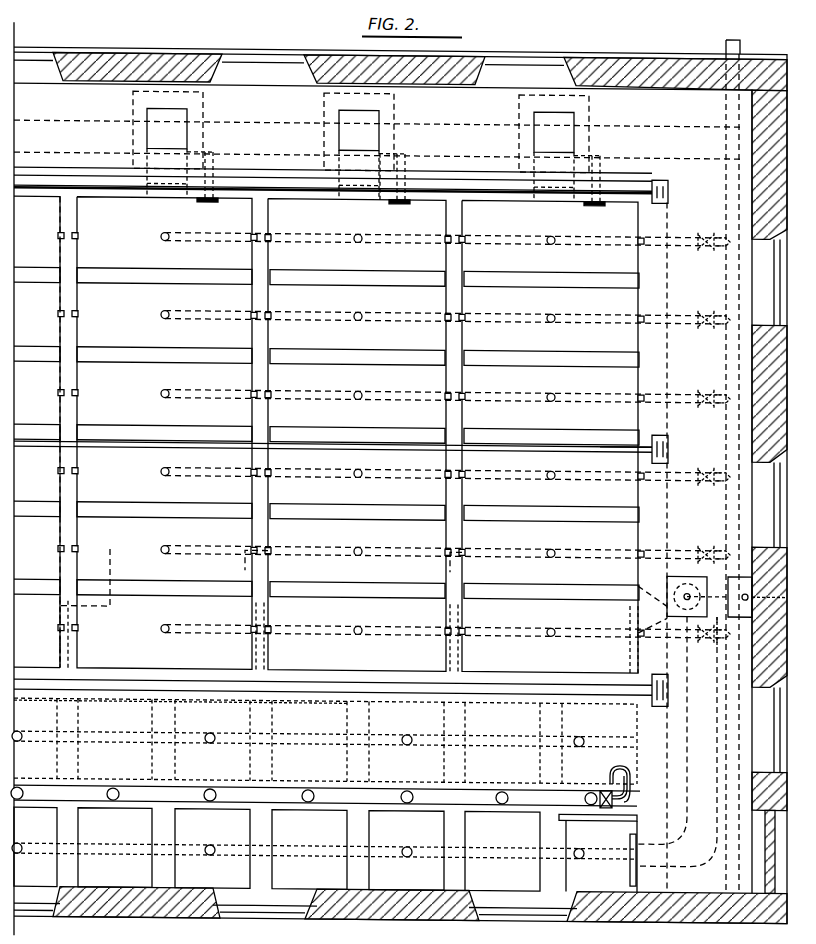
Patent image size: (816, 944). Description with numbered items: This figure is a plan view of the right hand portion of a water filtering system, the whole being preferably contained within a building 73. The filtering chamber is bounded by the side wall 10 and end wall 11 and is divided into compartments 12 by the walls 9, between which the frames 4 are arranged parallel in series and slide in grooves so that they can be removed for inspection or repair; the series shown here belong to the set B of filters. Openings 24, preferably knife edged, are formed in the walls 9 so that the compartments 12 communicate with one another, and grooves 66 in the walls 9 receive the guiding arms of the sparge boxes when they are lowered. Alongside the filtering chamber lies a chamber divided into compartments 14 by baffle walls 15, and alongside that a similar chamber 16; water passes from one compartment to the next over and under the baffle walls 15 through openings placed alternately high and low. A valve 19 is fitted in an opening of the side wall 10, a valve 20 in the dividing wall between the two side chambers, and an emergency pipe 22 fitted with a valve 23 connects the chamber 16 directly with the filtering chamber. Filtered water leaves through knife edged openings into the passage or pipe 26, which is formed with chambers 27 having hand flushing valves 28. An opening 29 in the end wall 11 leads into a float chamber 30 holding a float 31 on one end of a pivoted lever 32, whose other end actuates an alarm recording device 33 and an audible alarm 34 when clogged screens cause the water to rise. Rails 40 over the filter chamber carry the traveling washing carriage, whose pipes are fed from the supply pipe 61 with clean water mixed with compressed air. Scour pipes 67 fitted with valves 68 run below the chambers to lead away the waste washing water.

The frames 4 is at (128, 272).
The walls 9 is at (70, 484).
The side wall 10 is at (133, 192).
The end wall 11 is at (640, 420).
The compartments 12 is at (326, 467).
The compartments 14 is at (250, 823).
The baffle walls 15 is at (360, 190).
The chamber 16 is at (35, 846).
The valve 19 is at (332, 698).
The valve 20 is at (600, 811).
The emergency pipe 22 is at (716, 752).
The valve 23 is at (630, 860).
The openings 24 is at (72, 644).
The passage or pipe 26 is at (116, 112).
The chambers 27 is at (359, 132).
The hand flushing valves 28 is at (406, 196).
The opening 29 is at (660, 580).
The float chamber 30 is at (690, 570).
The float 31 is at (690, 610).
The pivoted lever 32 is at (722, 640).
The alarm recording device 33 is at (742, 612).
The audible alarm 34 is at (736, 614).
The rails 40 is at (530, 188).
The supply pipe 61 is at (152, 797).
The grooves 66 is at (456, 397).
The scour pipes 67 is at (584, 316).
The valves 68 is at (710, 247).
The building 73 is at (486, 78).
The set of filters B is at (381, 218).